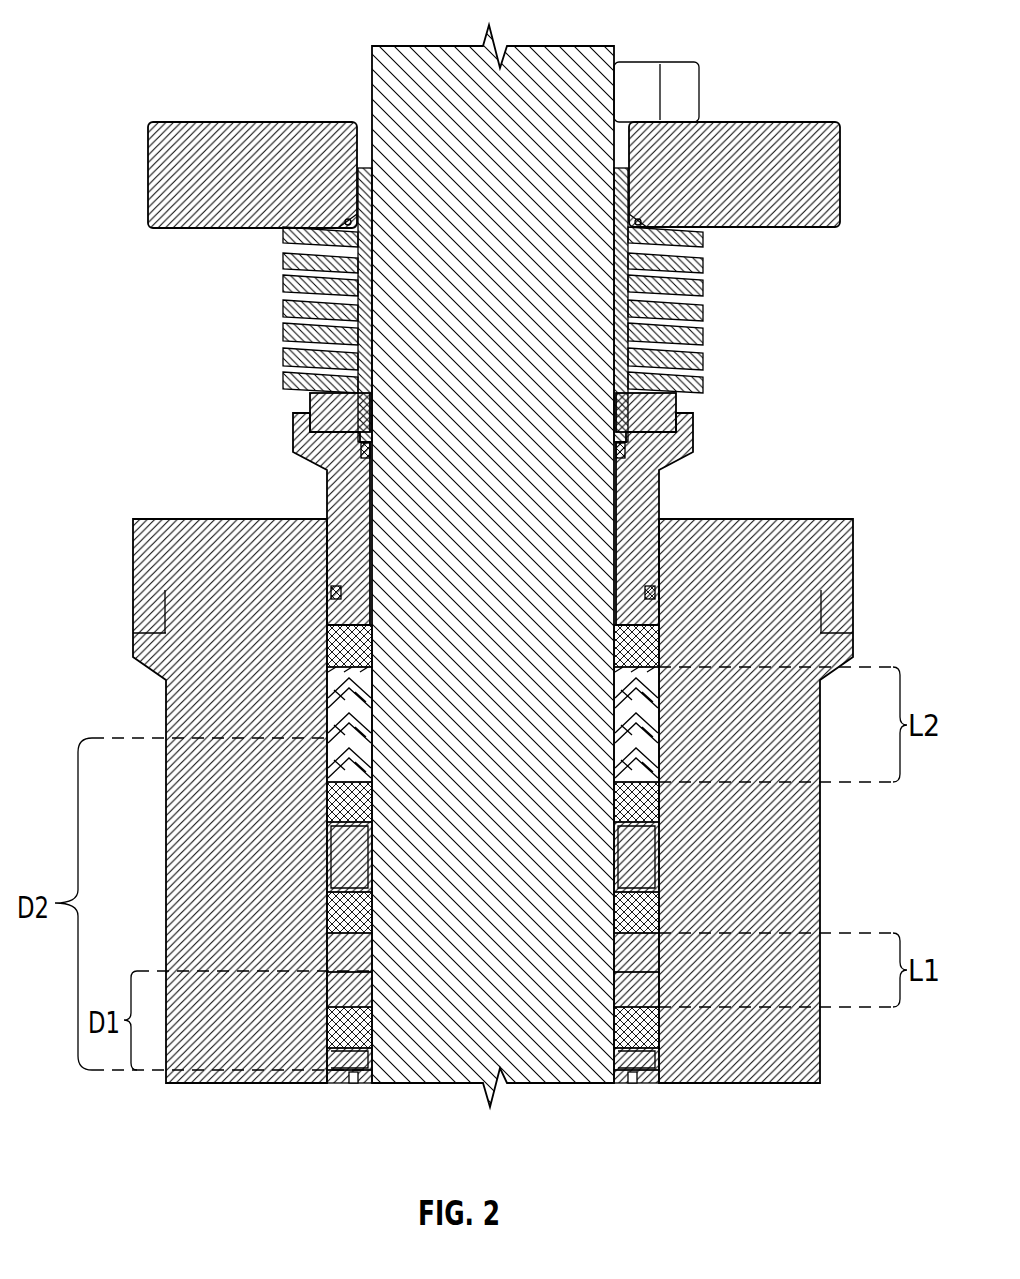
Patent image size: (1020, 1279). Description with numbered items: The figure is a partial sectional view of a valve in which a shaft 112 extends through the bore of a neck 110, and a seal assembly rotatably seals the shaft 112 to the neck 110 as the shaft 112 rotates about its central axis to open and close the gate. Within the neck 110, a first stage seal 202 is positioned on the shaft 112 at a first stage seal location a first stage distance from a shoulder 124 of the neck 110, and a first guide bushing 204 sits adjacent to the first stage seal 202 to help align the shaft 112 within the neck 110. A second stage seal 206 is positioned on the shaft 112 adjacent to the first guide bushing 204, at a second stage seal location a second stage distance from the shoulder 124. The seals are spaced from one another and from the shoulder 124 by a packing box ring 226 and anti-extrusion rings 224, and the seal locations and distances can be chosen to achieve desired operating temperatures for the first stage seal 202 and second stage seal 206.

The shaft 112 is at (396, 86).
The neck 110 is at (180, 910).
The second stage seal 206 is at (655, 686).
The anti-extrusion rings 224 is at (655, 802).
The first guide bushing 204 is at (655, 855).
The first stage seal 202 is at (655, 955).
The packing box ring 226 is at (333, 1067).
The shoulder 124 is at (353, 1076).